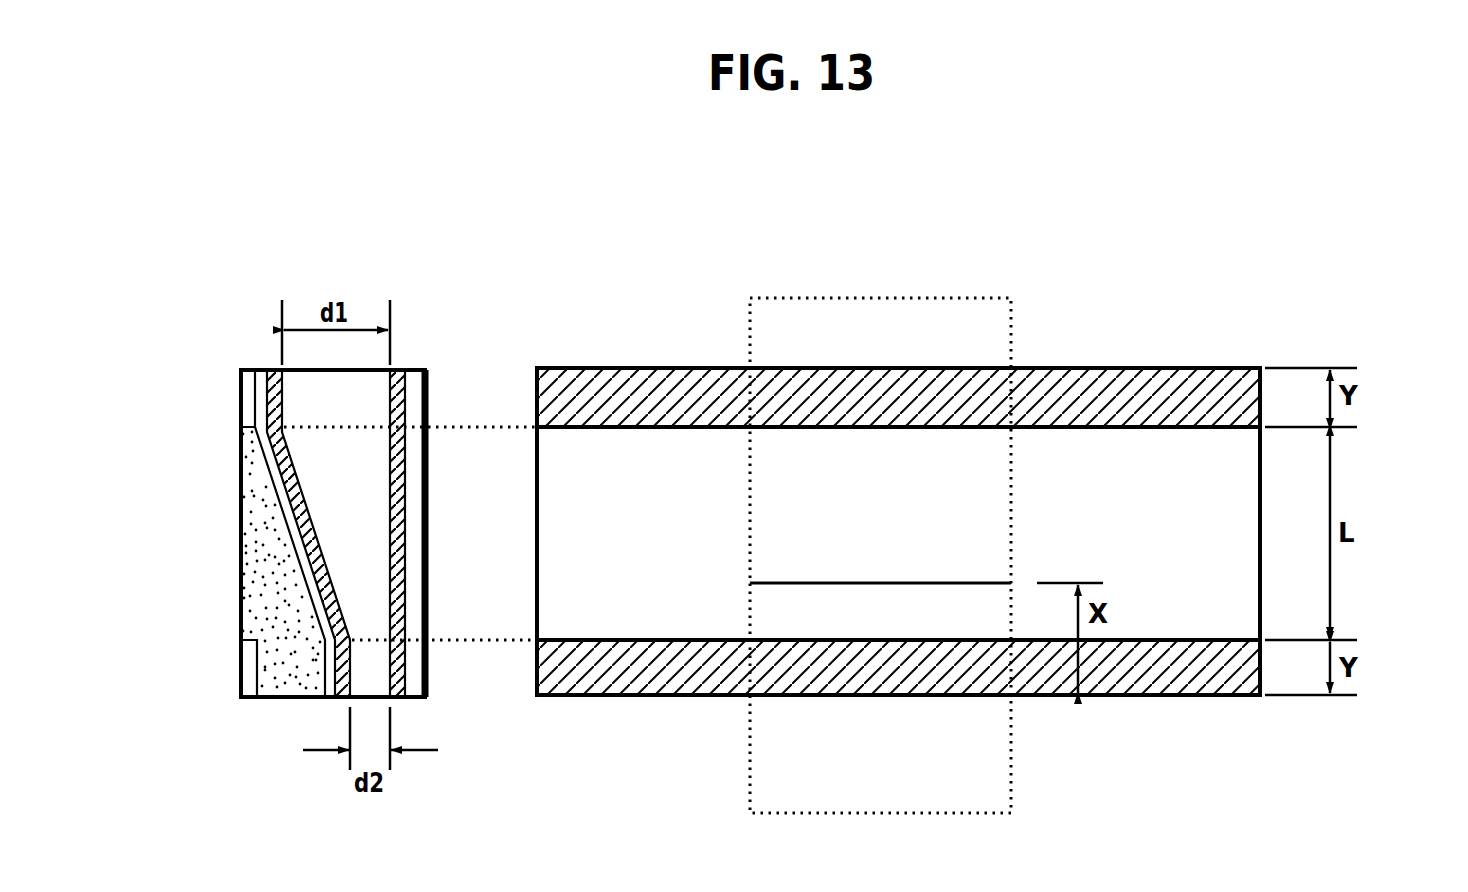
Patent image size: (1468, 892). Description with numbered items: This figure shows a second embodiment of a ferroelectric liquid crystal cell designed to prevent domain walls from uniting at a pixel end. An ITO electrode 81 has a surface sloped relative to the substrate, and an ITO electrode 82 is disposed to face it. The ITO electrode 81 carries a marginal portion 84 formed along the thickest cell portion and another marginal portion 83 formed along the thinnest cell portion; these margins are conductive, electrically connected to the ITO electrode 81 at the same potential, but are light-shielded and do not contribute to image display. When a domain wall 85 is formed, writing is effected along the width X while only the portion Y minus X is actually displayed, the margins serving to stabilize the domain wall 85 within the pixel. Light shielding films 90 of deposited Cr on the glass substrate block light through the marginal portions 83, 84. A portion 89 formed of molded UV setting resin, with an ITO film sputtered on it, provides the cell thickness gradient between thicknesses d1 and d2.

The ITO electrode 81 is at (1195, 563).
The ITO electrode 82 is at (956, 322).
The marginal portion 83 is at (608, 677).
The marginal portion 84 is at (573, 390).
The domain wall 85 is at (880, 538).
The portion formed of UV setting resin 89 is at (282, 687).
The light shielding film 90 is at (240, 408).